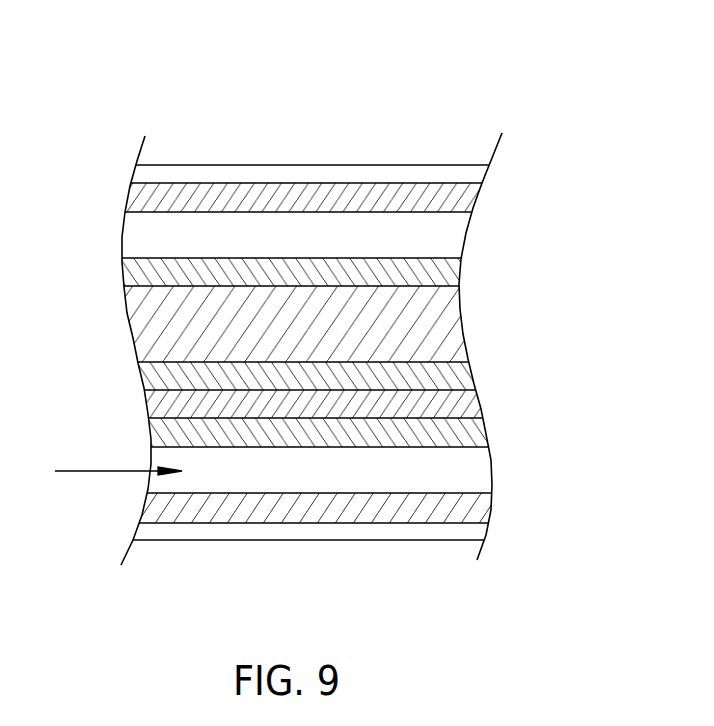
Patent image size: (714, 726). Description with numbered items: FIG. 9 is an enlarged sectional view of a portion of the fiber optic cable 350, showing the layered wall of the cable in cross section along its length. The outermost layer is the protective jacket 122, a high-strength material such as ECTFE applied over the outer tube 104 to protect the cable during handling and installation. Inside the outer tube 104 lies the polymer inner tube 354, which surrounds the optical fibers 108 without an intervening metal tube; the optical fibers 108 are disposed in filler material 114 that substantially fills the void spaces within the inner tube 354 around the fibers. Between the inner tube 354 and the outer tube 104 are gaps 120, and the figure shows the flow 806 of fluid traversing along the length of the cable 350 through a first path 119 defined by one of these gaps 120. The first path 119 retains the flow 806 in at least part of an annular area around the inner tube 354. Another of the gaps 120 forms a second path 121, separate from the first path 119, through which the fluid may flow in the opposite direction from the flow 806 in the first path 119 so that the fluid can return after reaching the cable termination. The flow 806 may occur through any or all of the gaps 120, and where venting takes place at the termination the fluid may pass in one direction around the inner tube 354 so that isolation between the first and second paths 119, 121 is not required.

The fiber optic cable 350 is at (212, 102).
The protective jacket 122 is at (468, 173).
The outer tube 104 is at (460, 199).
The second path 121 is at (453, 233).
The inner tube 354 is at (449, 270).
The filler material 114 is at (445, 322).
The optical fibers 108 is at (460, 382).
The first path 119 is at (473, 472).
The flow 806 is at (82, 471).
The gaps 120 is at (348, 460).